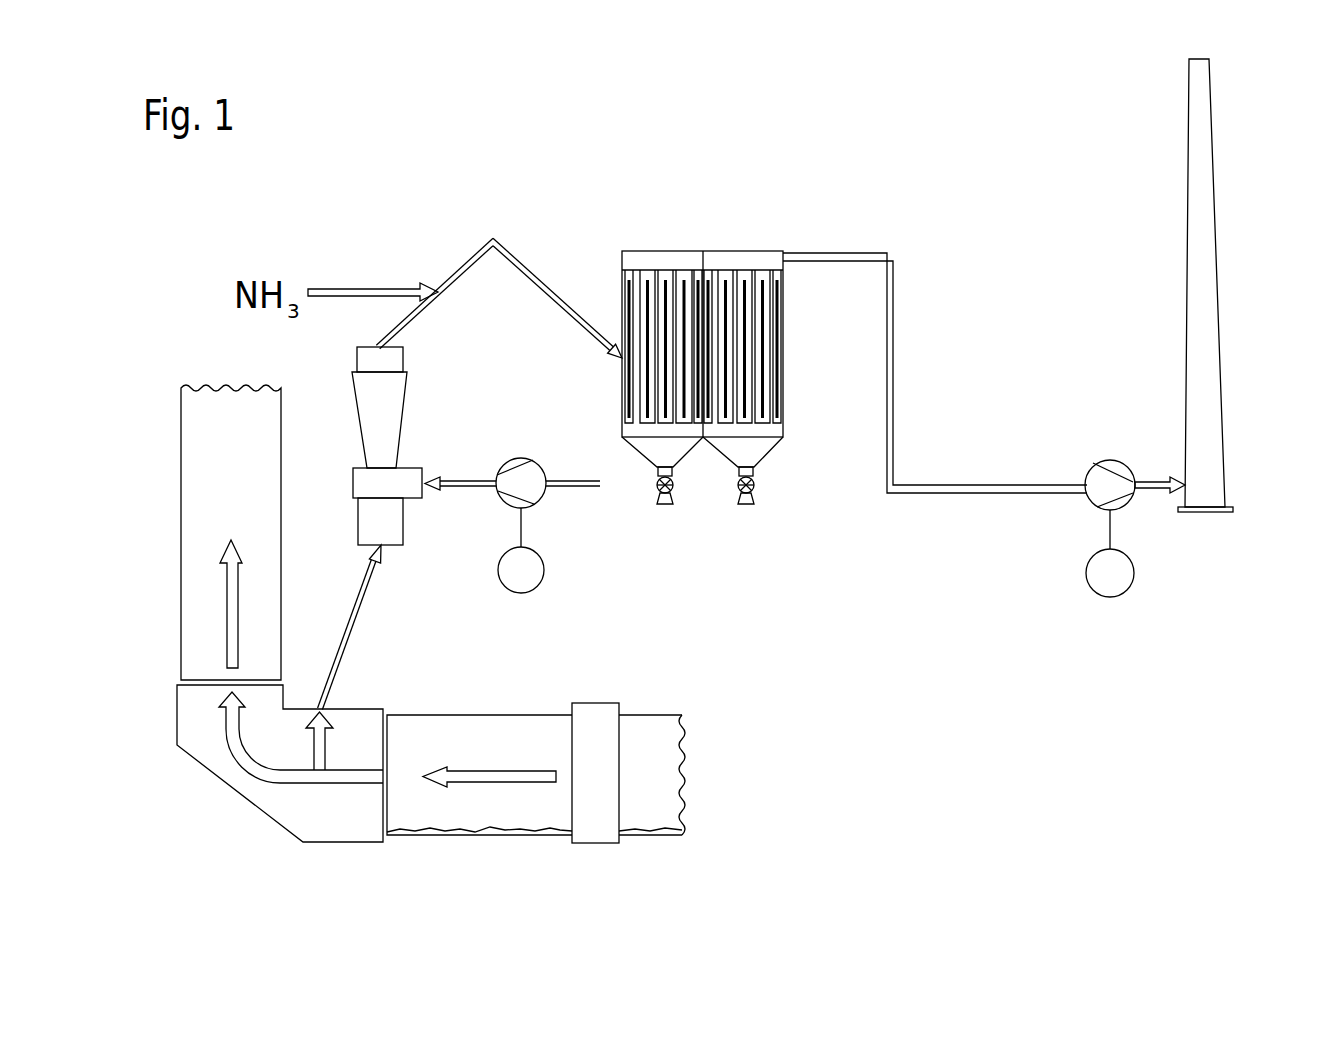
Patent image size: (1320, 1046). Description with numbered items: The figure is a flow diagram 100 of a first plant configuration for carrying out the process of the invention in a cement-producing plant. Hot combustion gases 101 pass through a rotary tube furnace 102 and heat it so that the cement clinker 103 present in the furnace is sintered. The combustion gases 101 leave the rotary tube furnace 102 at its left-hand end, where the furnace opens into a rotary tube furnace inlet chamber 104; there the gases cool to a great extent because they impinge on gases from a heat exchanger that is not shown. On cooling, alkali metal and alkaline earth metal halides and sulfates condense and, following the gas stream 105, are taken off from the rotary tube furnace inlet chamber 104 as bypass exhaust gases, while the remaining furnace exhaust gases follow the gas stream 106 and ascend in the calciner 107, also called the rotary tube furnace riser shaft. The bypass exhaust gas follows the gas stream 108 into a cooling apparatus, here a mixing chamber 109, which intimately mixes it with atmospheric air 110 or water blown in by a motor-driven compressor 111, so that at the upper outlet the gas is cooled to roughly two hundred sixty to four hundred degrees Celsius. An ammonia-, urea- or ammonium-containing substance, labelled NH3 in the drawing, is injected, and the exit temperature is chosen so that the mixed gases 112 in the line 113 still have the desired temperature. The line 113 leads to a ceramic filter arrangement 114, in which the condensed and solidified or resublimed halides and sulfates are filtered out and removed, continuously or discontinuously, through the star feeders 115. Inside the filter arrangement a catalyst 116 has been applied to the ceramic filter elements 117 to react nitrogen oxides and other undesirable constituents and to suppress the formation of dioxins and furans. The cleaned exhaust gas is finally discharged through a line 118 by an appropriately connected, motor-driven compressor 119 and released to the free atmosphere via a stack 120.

The flow diagram 100 is at (762, 146).
The combustion gases 101 is at (474, 775).
The rotary tube furnace 102 is at (503, 715).
The cement clinker 103 is at (497, 829).
The rotary tube furnace inlet chamber 104 is at (365, 709).
The gas stream 105 is at (326, 748).
The gas stream 106 is at (236, 742).
The calciner 107 is at (283, 590).
The gas stream 108 is at (351, 637).
The mixing chamber 109 is at (388, 426).
The atmospheric air 110 is at (582, 488).
The motor-driven compressor 111 is at (512, 463).
The mixed gases 112 is at (418, 318).
The line 113 is at (555, 293).
The ceramic filter arrangement 114 is at (665, 251).
The star feeders 115 is at (675, 485).
The catalyst 116 is at (780, 334).
The ceramic filter elements 117 is at (786, 374).
The line 118 is at (894, 366).
The motor-driven compressor 119 is at (1113, 462).
The stack 120 is at (1215, 428).